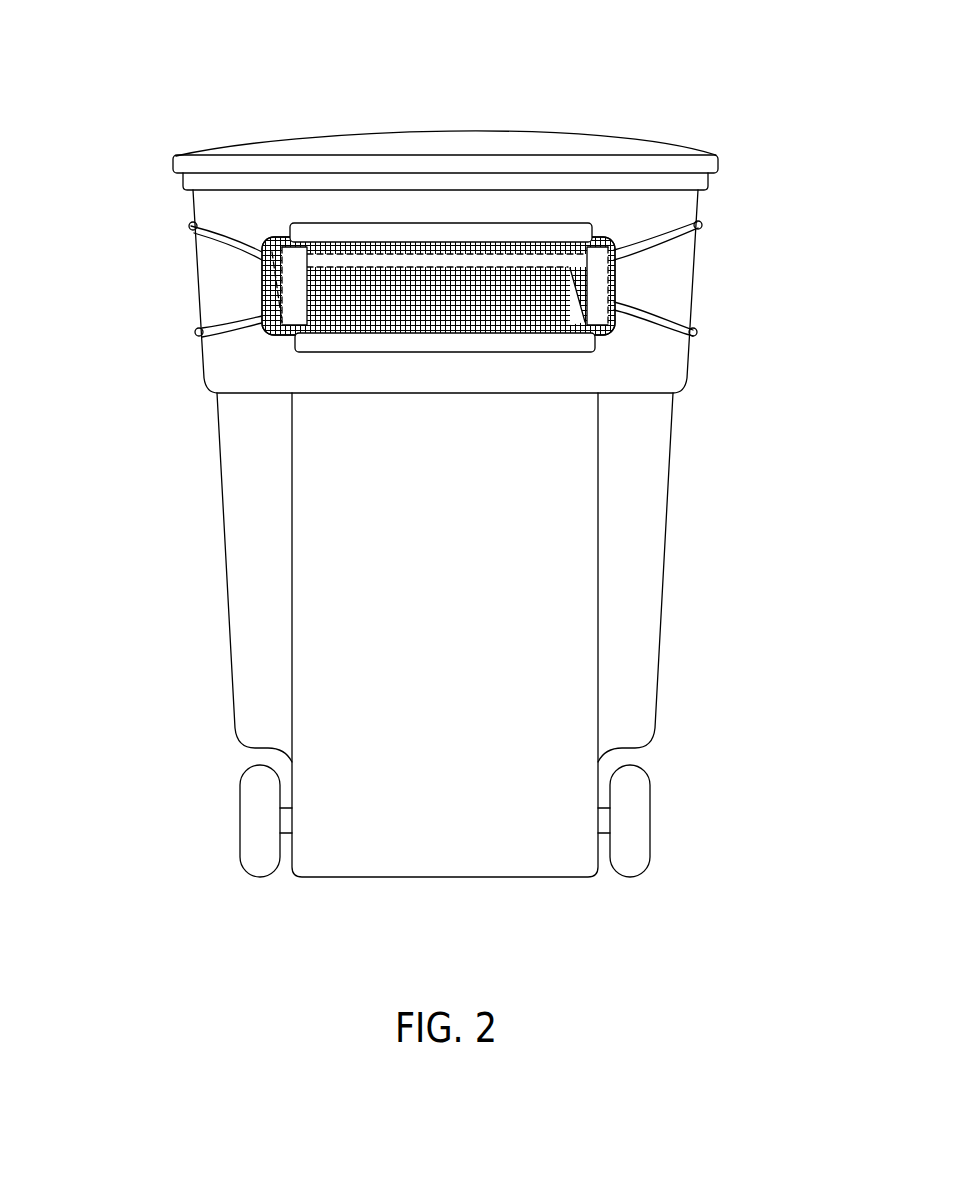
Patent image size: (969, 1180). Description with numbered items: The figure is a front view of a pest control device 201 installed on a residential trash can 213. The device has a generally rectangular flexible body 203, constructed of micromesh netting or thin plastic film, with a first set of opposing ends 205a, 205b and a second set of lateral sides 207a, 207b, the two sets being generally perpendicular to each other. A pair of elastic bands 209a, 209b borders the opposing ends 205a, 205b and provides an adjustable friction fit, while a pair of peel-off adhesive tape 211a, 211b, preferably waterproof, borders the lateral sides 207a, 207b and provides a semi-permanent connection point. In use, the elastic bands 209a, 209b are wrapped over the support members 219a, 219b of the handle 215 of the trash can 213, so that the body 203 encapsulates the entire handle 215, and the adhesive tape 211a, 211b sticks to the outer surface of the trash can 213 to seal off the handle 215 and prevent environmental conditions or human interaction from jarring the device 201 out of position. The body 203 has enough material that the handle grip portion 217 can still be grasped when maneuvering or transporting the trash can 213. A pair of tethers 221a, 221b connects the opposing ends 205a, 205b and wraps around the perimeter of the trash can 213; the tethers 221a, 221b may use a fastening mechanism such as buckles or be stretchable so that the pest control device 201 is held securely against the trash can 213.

The pest control device 201 is at (172, 62).
The flexible body 203 is at (352, 317).
The first opposing end 205a is at (252, 300).
The second opposing end 205b is at (634, 269).
The first lateral side 207a is at (376, 213).
The second lateral side 207b is at (437, 368).
The first elastic band 209a is at (212, 333).
The second elastic band 209b is at (616, 286).
The first peel-off adhesive tape 211a is at (592, 233).
The second peel-off adhesive tape 211b is at (550, 340).
The residential trash can 213 is at (693, 288).
The handle 215 is at (266, 282).
The handle grip portion 217 is at (473, 260).
The first support member 219a is at (248, 262).
The second support member 219b is at (650, 330).
The first tether 221a is at (225, 247).
The second tether 221b is at (196, 332).